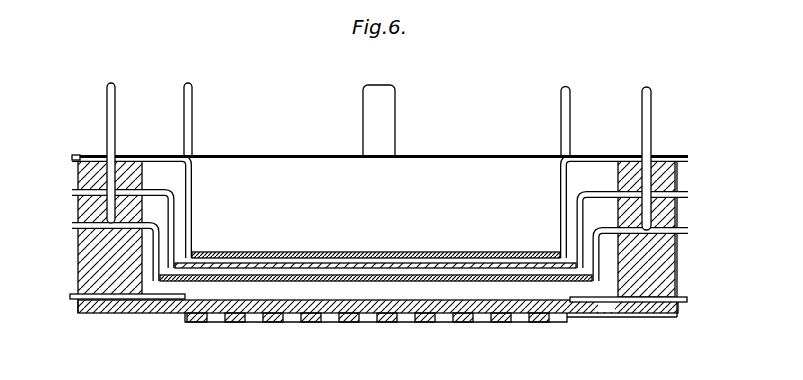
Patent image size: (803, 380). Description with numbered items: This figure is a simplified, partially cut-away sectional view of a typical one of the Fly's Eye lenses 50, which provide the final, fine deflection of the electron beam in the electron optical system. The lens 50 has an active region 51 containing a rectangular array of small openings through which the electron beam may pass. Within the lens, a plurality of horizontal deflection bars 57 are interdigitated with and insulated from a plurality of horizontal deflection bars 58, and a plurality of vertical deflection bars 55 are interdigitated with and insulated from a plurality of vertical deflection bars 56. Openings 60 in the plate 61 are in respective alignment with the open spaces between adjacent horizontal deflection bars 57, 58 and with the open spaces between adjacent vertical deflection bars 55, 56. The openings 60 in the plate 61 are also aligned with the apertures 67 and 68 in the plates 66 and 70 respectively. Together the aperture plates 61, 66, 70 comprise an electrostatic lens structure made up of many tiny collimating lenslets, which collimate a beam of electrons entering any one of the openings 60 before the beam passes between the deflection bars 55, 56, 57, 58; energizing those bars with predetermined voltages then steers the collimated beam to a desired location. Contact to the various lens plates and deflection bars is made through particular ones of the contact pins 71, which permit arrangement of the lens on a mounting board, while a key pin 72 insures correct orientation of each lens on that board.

The Fly's Eye lens 50 is at (72, 212).
The active region 51 is at (290, 188).
The vertical deflection bars 55 is at (170, 312).
The vertical deflection bars 56 is at (150, 313).
The horizontal deflection bars 57 is at (233, 322).
The horizontal deflection bars 58 is at (189, 326).
The openings 60 is at (376, 254).
The plate 61 is at (230, 252).
The plate 66 is at (569, 250).
The apertures 67 is at (465, 265).
The apertures 68 is at (397, 283).
The plate 70 is at (600, 290).
The contact pins 71 is at (183, 103).
The key pin 72 is at (395, 102).